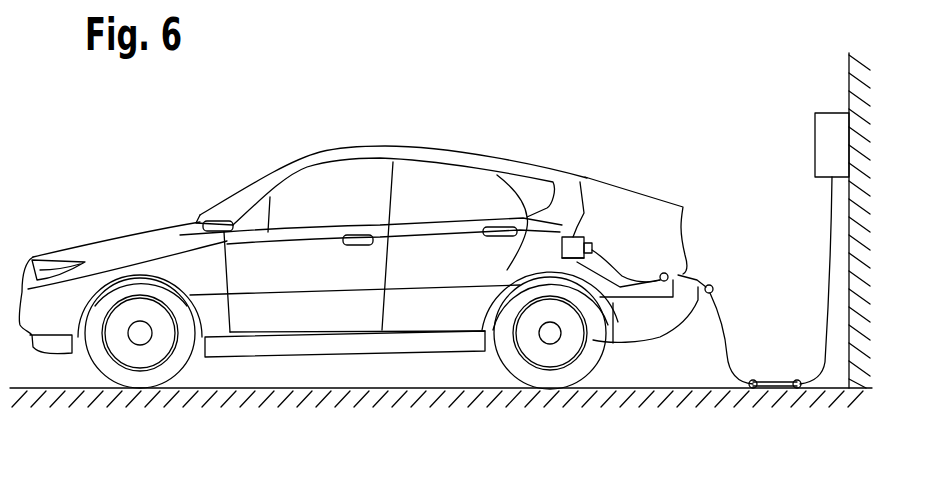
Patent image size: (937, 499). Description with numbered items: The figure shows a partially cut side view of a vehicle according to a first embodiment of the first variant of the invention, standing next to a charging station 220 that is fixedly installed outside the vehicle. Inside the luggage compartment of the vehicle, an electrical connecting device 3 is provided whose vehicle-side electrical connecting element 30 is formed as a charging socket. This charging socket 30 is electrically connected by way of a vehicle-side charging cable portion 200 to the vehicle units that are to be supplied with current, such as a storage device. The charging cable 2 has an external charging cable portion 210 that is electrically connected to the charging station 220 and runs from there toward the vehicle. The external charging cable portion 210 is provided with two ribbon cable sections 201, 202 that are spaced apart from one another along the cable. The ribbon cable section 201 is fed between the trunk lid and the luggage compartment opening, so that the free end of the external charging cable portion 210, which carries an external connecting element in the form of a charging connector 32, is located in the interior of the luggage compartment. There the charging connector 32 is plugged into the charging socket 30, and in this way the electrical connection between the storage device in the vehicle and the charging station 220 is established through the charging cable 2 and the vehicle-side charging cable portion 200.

The charging cable 2 is at (732, 318).
The electrical connecting device 3 is at (579, 214).
The vehicle-side electrical connecting element 30 is at (570, 258).
The charging connector 32 is at (586, 250).
The vehicle-side charging cable portion 200 is at (563, 260).
The ribbon cable section 201 is at (698, 277).
The ribbon cable section 202 is at (773, 380).
The external charging cable portion 210 is at (726, 356).
The charging station 220 is at (827, 137).